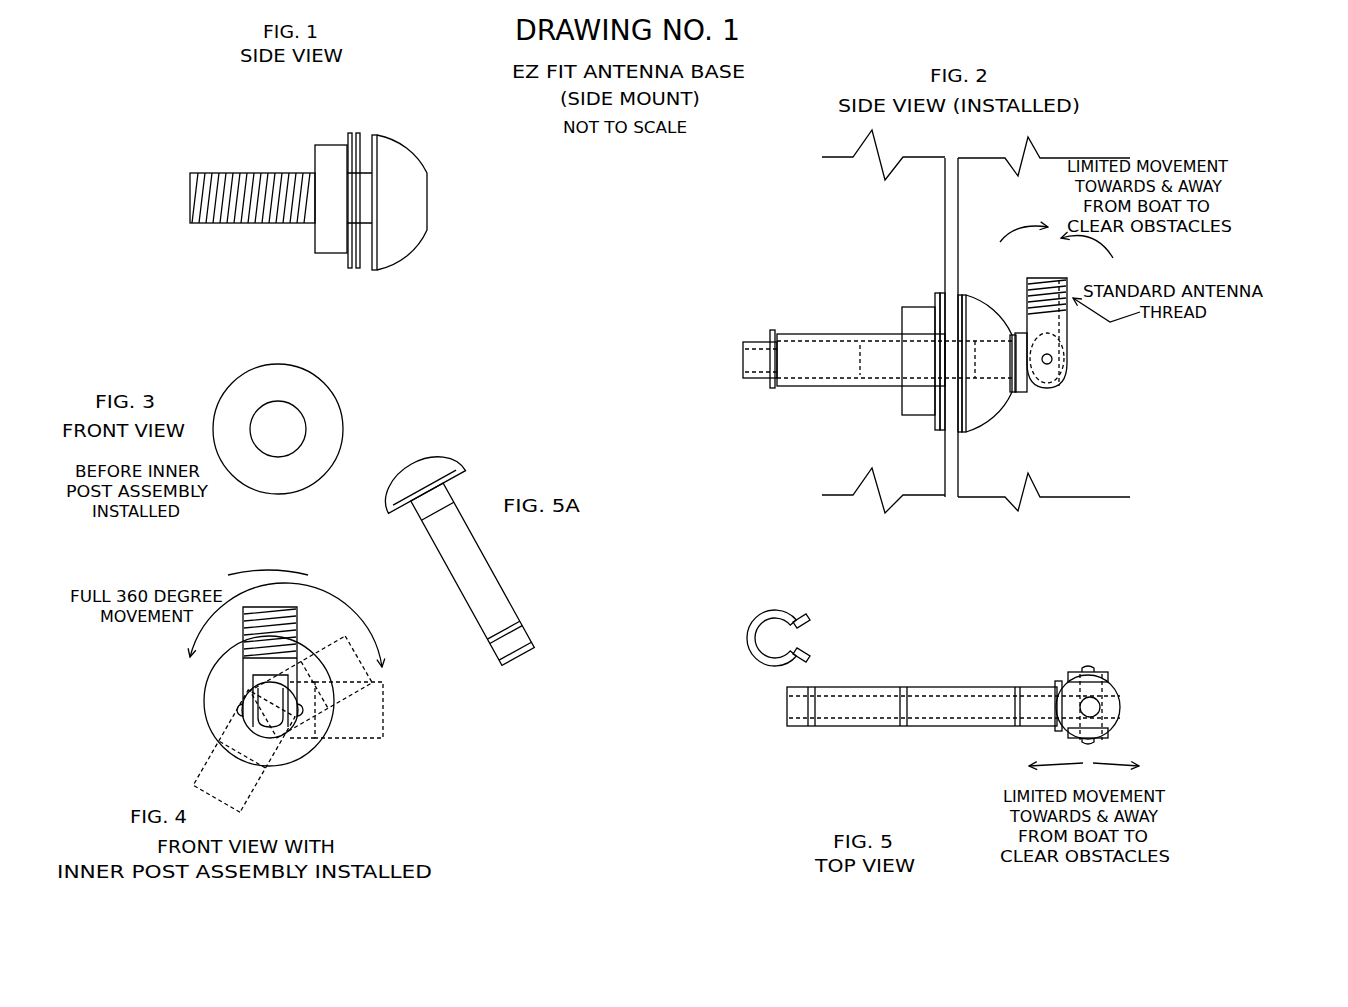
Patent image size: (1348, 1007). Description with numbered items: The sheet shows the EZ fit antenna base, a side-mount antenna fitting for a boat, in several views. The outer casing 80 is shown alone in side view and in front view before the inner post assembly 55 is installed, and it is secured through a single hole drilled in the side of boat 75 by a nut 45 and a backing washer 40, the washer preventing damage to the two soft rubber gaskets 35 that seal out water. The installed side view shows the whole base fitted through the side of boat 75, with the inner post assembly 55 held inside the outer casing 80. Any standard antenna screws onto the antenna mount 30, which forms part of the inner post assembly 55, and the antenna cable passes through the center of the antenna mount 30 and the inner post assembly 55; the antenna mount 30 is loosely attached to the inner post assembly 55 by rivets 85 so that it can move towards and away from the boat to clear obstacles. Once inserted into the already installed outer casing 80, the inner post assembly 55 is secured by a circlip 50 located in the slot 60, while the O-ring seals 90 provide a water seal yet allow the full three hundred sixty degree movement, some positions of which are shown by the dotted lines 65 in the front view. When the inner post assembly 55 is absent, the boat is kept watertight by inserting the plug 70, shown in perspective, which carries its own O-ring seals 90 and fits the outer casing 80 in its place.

In FIG. 2, the antenna mount 30 is at (1153, 365).
In FIG. 5, the antenna mount 30 is at (1173, 727).
In FIG. 1, the gaskets 35 is at (359, 125).
In FIG. 2, the gaskets 35 is at (978, 460).
In FIG. 1, the backing washer 40 is at (346, 130).
In FIG. 2, the backing washer 40 is at (934, 427).
In FIG. 1, the nut 45 is at (313, 158).
In FIG. 2, the nut 45 is at (901, 398).
In FIG. 2, the circlip 50 is at (768, 330).
In FIG. 5, the circlip 50 is at (838, 660).
In FIG. 2, the inner post assembly 55 is at (741, 373).
In FIG. 5, the inner post assembly 55 is at (1000, 733).
In FIG. 5A, the slot 60 is at (677, 745).
In FIG. 5, the slot 60 is at (823, 745).
In FIG. 4, the positions of movement 65 is at (350, 735).
In FIG. 5A, the plug 70 is at (456, 537).
In FIG. 2, the side of boat 75 is at (941, 228).
In FIG. 1, the outer casing 80 is at (258, 234).
In FIG. 3, the outer casing 80 is at (315, 397).
In FIG. 2, the outer casing 80 is at (978, 294).
In FIG. 2, the rivets 85 is at (1053, 360).
In FIG. 5, the rivets 85 is at (1087, 667).
In FIG. 5A, the O-ring seals 90 is at (548, 603).
In FIG. 5, the O-ring seals 90 is at (1013, 690).